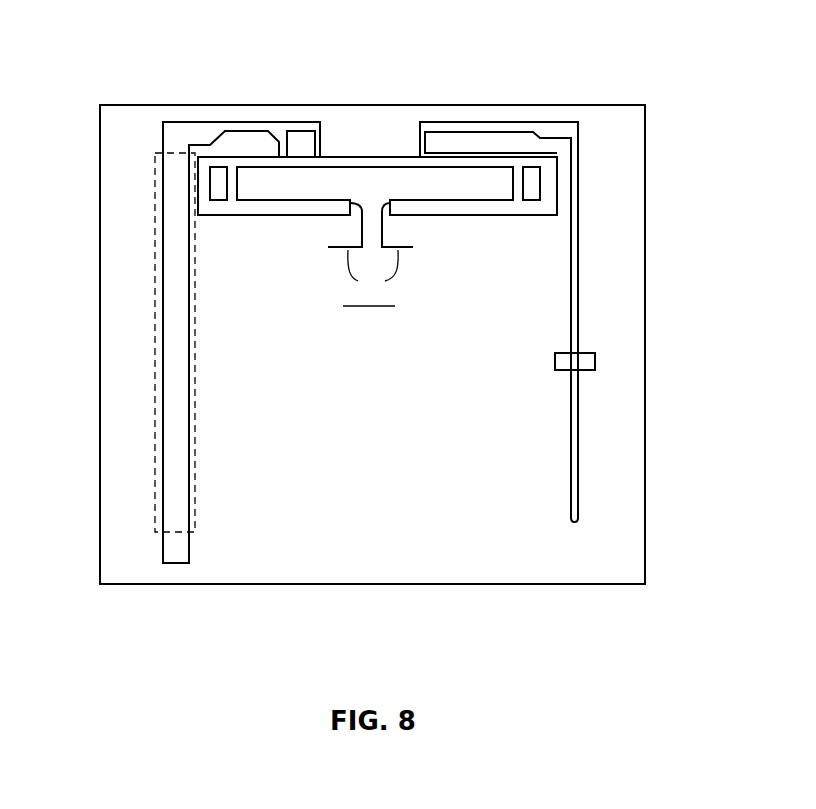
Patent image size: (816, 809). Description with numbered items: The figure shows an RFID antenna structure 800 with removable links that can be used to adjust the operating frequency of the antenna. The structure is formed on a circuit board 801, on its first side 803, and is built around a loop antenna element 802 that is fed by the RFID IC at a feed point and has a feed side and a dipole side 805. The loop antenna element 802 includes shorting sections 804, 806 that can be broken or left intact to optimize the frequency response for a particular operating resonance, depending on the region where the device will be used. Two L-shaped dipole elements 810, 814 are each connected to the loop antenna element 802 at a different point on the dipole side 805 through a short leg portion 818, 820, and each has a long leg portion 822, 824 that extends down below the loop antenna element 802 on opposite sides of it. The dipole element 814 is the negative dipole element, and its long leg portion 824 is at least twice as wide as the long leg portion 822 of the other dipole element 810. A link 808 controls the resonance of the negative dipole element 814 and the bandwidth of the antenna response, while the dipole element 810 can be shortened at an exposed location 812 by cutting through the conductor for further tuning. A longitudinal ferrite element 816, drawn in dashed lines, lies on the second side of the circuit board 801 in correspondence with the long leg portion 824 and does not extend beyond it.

The RFID antenna structure 800 is at (740, 44).
The circuit board 801 is at (100, 152).
The loop antenna element 802 is at (373, 156).
The first side 803 is at (397, 560).
The shorting section 804 is at (512, 182).
The dipole side 805 is at (390, 156).
The shorting section 806 is at (237, 180).
The link 808 is at (278, 150).
The dipole element 810 is at (580, 262).
The exposed location 812 is at (596, 361).
The negative dipole element 814 is at (163, 345).
The longitudinal ferrite element 816 is at (152, 253).
The short leg portion 818 is at (487, 122).
The short leg portion 820 is at (220, 122).
The long leg portion 822 is at (584, 408).
The long leg portion 824 is at (163, 418).